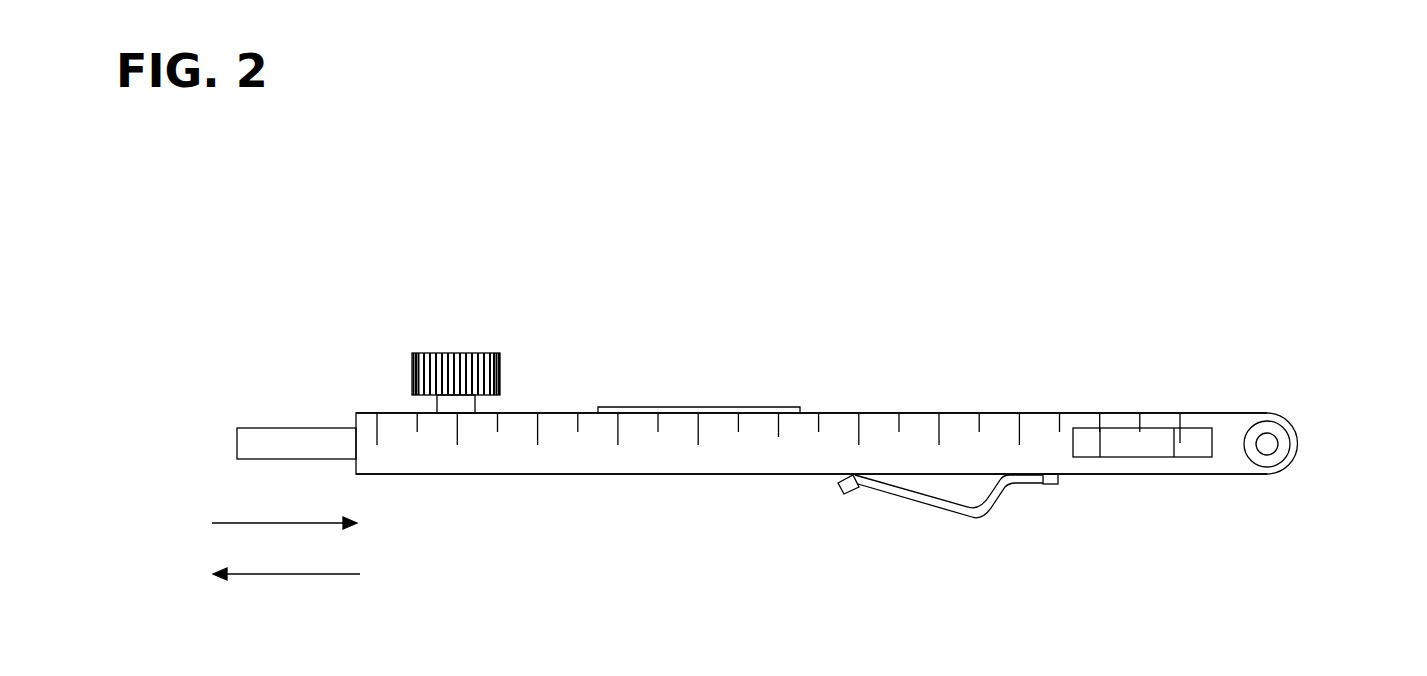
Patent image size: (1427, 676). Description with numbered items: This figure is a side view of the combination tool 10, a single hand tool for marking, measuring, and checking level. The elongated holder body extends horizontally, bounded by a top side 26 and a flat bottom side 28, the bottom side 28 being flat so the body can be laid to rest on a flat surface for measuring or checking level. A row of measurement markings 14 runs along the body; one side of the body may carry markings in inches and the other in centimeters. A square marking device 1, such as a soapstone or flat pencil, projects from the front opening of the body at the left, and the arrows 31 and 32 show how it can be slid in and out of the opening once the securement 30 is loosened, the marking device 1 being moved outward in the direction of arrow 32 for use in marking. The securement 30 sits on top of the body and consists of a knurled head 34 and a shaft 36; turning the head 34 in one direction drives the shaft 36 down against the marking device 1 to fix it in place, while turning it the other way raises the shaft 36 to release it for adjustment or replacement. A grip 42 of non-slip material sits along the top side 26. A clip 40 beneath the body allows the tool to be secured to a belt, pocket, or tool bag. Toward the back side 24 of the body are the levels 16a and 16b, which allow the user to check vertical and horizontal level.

The combination tool 10 is at (303, 258).
The marking device 1 is at (258, 433).
The measurement markings 14 is at (782, 437).
The top side 26 is at (580, 413).
The bottom side 28 is at (585, 474).
The securement 30 is at (457, 353).
The head 34 is at (410, 370).
The shaft 36 is at (437, 405).
The grip 42 is at (702, 410).
The clip 40 is at (938, 507).
The level 16a is at (1166, 424).
The level 16b is at (1267, 444).
The back side 24 is at (1298, 441).
The arrow 31 is at (260, 523).
The arrow 32 is at (312, 574).